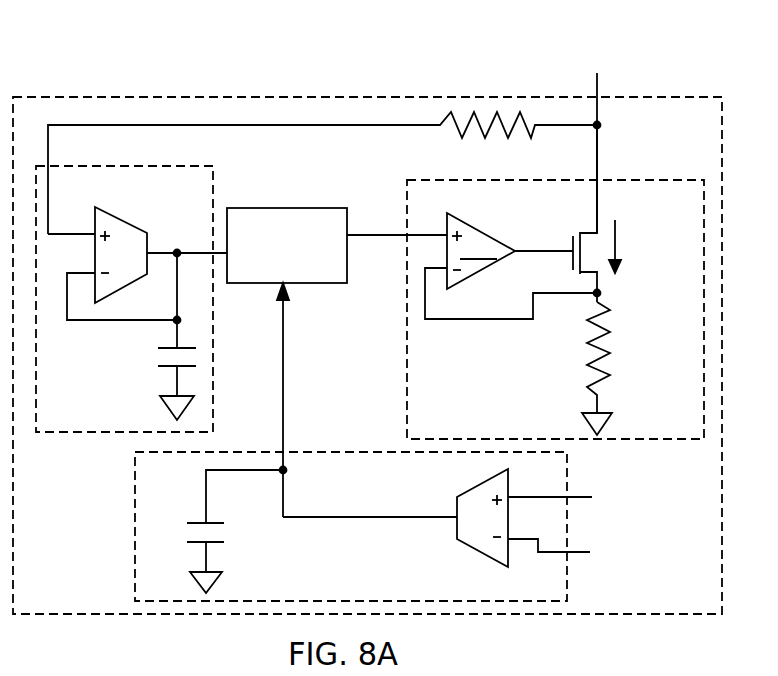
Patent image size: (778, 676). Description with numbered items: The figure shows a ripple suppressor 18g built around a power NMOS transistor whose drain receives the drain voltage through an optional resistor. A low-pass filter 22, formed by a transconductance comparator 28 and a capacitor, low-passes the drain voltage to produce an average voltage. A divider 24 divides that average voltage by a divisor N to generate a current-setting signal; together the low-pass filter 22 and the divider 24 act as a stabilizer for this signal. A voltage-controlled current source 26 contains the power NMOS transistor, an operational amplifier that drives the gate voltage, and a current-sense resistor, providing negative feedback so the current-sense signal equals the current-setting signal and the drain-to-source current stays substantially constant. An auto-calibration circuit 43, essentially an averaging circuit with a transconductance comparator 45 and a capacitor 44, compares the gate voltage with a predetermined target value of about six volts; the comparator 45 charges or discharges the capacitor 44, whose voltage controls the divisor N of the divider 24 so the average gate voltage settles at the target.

The ripple suppressor 18g is at (700, 128).
The low-pass filter 22 is at (195, 196).
The divider 24 is at (297, 271).
The voltage-controlled current source 26 is at (682, 221).
The transconductance comparator 28 is at (121, 288).
The auto-calibration circuit 43 is at (560, 478).
The capacitor 44 is at (235, 531).
The transconductance comparator 45 is at (477, 552).